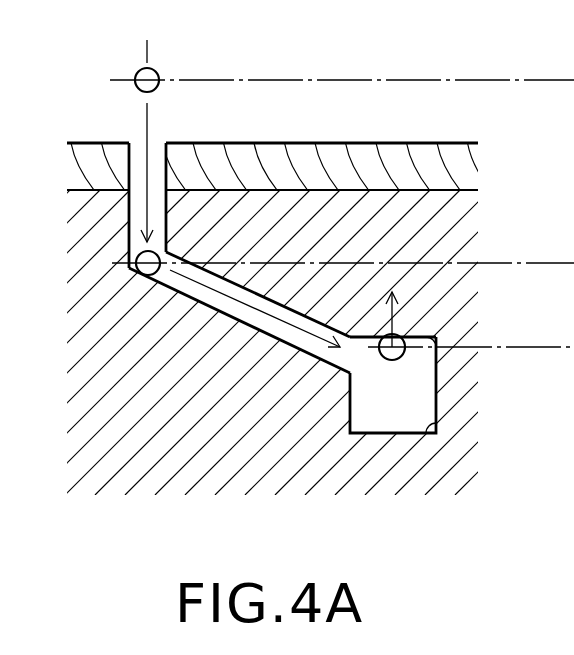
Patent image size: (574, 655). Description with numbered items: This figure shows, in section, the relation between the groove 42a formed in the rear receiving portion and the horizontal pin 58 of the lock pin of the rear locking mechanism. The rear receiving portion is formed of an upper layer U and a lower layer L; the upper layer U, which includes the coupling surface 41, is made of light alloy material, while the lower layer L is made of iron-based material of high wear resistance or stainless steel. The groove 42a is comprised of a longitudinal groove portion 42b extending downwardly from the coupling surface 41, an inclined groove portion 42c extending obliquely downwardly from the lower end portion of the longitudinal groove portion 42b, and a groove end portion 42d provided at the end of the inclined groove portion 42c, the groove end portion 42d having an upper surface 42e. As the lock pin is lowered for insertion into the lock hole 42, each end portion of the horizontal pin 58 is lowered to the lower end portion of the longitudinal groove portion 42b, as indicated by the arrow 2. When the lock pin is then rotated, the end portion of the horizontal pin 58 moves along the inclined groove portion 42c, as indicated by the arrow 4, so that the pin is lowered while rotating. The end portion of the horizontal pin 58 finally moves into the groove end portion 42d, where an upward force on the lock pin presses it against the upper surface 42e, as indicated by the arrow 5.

The coupling surface 41 is at (330, 143).
The lock hole 42 is at (71, 296).
The groove 42a is at (137, 152).
The longitudinal groove portion 42b is at (165, 165).
The inclined groove portion 42c is at (208, 300).
The groove end portion 42d is at (430, 435).
The upper surface 42e is at (425, 340).
The horizontal pin 58 is at (157, 72).
The upper layer U is at (465, 160).
The lower layer L is at (463, 245).
The arrow ② 2 is at (145, 118).
The arrow ④ 4 is at (287, 330).
The arrow ⑤ 5 is at (395, 312).